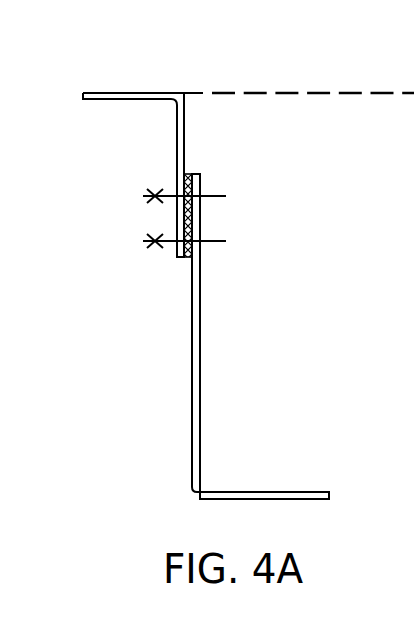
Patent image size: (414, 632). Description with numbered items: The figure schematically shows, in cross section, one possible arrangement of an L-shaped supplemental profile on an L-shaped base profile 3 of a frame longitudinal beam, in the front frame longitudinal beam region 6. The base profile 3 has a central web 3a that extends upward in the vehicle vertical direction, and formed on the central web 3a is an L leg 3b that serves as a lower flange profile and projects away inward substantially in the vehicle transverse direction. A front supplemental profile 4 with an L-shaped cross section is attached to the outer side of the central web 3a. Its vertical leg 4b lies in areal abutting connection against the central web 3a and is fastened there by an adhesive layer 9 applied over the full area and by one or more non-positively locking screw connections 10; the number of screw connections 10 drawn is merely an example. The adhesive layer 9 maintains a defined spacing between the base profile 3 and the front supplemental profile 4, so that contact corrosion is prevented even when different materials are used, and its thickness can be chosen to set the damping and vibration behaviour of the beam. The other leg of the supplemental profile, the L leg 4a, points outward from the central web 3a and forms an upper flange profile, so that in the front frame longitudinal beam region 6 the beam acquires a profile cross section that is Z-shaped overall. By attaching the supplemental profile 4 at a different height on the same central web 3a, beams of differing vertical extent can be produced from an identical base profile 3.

The base profile 3 is at (188, 415).
The central web 3a is at (202, 364).
The L leg 3b is at (286, 492).
The front supplemental profile 4 is at (172, 90).
The L leg 4a is at (110, 99).
The vertical leg 4b is at (186, 149).
The front frame longitudinal beam region 6 is at (270, 298).
The adhesive layer 9 is at (184, 258).
The screw connection 10 is at (214, 196).